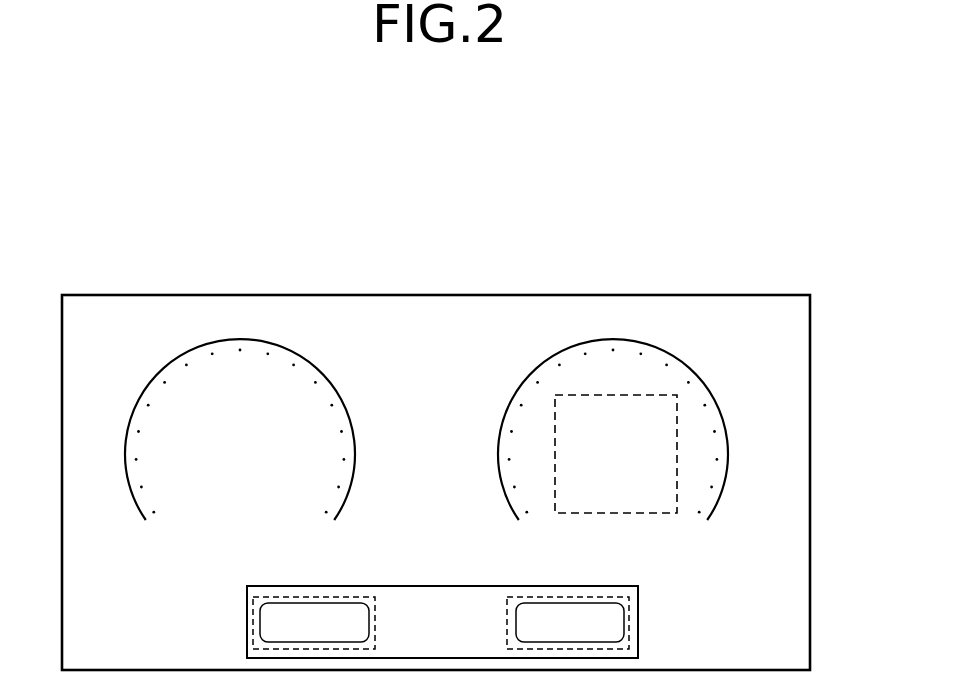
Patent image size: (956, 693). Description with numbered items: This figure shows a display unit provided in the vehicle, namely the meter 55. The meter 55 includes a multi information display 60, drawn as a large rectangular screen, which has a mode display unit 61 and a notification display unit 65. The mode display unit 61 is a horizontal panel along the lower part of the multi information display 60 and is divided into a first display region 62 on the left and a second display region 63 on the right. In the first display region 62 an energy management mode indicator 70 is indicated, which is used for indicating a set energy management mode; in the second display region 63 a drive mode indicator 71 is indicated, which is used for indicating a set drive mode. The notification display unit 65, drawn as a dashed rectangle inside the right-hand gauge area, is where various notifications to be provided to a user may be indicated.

The meter 55 is at (610, 243).
The multi information display 60 is at (428, 295).
The mode display unit 61 is at (441, 586).
The first display region 62 is at (304, 597).
The second display region 63 is at (545, 597).
The notification display unit 65 is at (615, 514).
The energy management mode indicator 70 is at (260, 627).
The drive mode indicator 71 is at (620, 628).